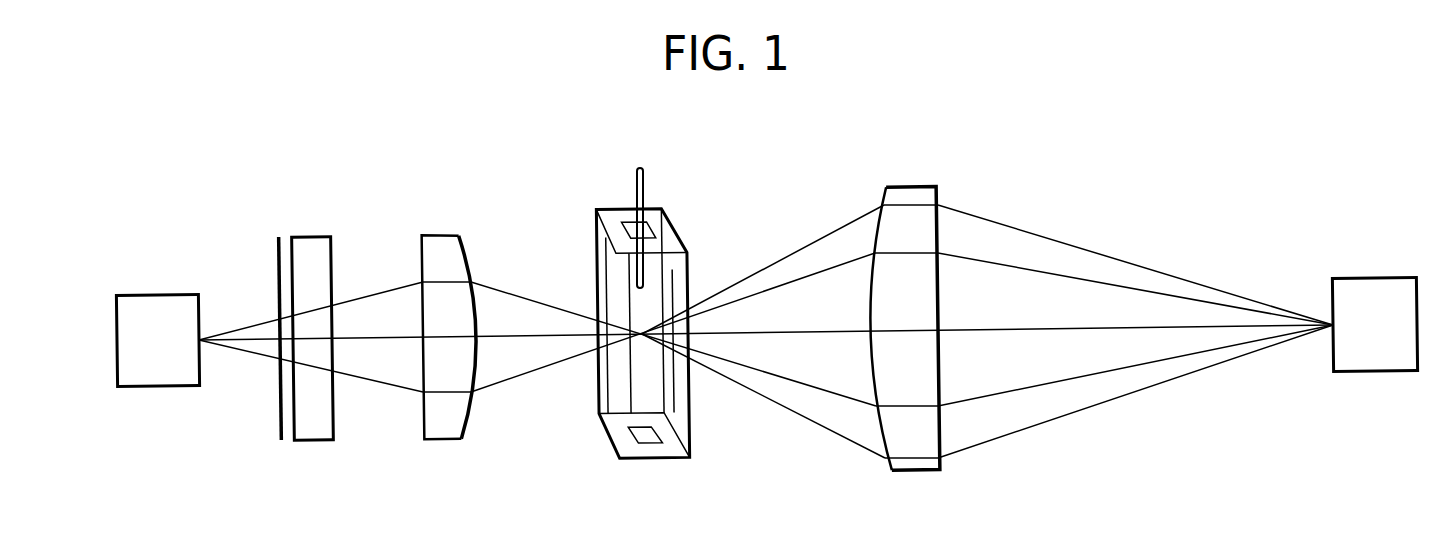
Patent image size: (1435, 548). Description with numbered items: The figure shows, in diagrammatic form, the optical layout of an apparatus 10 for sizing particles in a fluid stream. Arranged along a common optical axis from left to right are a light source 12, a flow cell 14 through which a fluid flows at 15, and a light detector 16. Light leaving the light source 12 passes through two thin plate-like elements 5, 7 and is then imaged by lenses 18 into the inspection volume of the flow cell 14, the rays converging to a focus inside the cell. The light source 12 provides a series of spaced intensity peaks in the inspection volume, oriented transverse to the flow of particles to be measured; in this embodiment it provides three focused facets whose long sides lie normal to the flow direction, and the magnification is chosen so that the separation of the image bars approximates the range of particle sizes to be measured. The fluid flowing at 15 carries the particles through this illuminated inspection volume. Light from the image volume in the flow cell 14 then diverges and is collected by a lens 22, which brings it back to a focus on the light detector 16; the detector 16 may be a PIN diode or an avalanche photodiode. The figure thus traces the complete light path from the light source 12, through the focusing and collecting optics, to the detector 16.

The apparatus 10 is at (1222, 258).
The light source 12 is at (152, 295).
The filter 5 is at (279, 265).
The polarizer plate 7 is at (305, 237).
The lenses 18 is at (440, 235).
The flow cell 14 is at (645, 458).
The fluid flow 15 is at (644, 185).
The lens 22 is at (908, 187).
The light detector 16 is at (1373, 278).